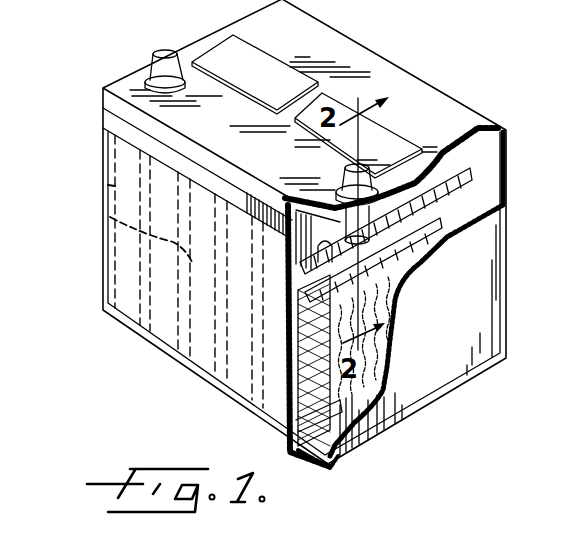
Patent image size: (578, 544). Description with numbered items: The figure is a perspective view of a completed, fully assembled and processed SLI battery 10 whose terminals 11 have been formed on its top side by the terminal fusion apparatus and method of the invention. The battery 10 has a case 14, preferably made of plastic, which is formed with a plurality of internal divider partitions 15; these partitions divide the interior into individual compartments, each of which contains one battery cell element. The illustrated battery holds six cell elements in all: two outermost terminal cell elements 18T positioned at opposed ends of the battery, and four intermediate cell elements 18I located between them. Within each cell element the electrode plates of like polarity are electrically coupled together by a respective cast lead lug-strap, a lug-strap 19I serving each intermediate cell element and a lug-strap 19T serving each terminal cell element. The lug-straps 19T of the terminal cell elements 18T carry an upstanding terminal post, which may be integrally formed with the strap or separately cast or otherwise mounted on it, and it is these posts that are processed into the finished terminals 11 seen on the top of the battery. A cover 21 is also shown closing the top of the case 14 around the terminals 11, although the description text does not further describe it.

The storage battery 10 is at (108, 73).
The terminal post 11 is at (165, 55).
The container 14 is at (486, 330).
The cell partition 15 is at (137, 277).
The terminal cell element 18T is at (98, 180).
The intermediate cell element 18I is at (150, 210).
The terminal plate strap 19T is at (477, 192).
The intercell plate strap 19I is at (447, 178).
The cover 21 is at (357, 51).